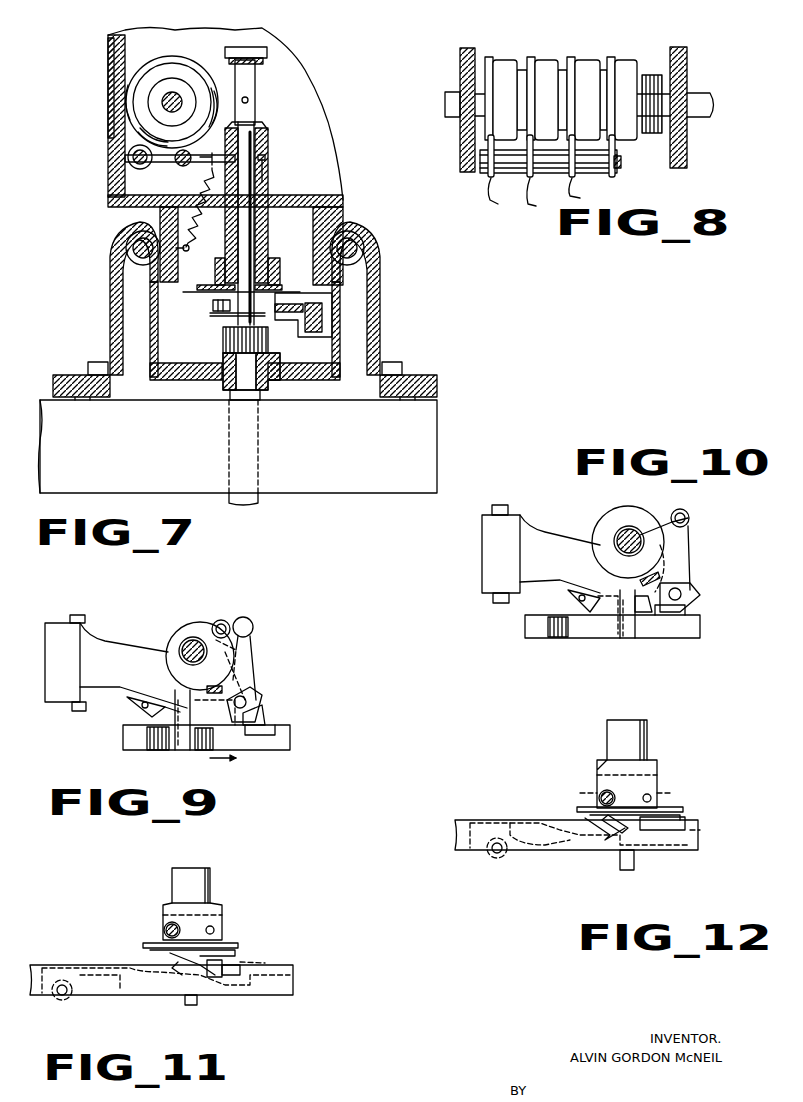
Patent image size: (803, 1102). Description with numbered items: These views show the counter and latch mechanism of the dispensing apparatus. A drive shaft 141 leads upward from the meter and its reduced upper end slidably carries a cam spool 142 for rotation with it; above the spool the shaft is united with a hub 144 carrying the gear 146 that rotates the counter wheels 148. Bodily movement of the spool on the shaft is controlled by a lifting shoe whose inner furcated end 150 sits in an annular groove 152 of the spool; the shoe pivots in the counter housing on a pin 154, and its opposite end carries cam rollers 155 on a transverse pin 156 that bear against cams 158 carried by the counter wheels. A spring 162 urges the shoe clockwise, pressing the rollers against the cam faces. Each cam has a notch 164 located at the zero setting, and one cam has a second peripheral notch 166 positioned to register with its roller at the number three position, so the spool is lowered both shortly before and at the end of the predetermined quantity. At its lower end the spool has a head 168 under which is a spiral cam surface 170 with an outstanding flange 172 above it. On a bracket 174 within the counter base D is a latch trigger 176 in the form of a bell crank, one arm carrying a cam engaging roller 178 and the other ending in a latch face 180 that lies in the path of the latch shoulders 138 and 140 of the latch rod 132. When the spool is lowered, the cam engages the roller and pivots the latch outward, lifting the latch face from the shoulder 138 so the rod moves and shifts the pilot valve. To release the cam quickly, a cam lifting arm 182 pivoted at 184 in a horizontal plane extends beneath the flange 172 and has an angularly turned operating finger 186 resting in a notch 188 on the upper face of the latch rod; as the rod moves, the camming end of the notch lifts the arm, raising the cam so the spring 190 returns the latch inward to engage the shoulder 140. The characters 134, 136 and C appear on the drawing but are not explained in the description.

In FIG. 9, the latch rod 132 is at (292, 741).
In FIG. 10, the latch rod 132 is at (700, 628).
In FIG. 11, the latch rod 132 is at (293, 978).
In FIG. 12, the latch rod 132 is at (698, 849).
In FIG. 9, the notch 134 is at (265, 727).
In FIG. 10, the notch 134 is at (666, 626).
In FIG. 9, the slot 136 is at (232, 733).
In FIG. 10, the slot 136 is at (605, 626).
In FIG. 9, the latch shoulder 138 is at (258, 710).
In FIG. 10, the latch shoulder 138 is at (645, 626).
In FIG. 9, the latch shoulder 140 is at (184, 742).
In FIG. 10, the latch shoulder 140 is at (593, 623).
In FIG. 7, the drive shaft 141 is at (258, 471).
In FIG. 9, the drive shaft 141 is at (193, 642).
In FIG. 10, the drive shaft 141 is at (636, 532).
In FIG. 11, the drive shaft 141 is at (188, 1005).
In FIG. 12, the drive shaft 141 is at (642, 867).
In FIG. 7, the cam spool 142 is at (262, 237).
In FIG. 11, the cam spool 142 is at (212, 891).
In FIG. 12, the cam spool 142 is at (647, 742).
In FIG. 7, the hub 144 is at (256, 96).
In FIG. 7, the gear 146 is at (268, 54).
In FIG. 7, the counter wheels 148 is at (180, 66).
In FIG. 8, the counter wheels 148 is at (505, 60).
In FIG. 7, the inner furcated end 150 is at (265, 158).
In FIG. 7, the annular groove 152 is at (262, 172).
In FIG. 7, the pin 154 is at (177, 169).
In FIG. 7, the cam rollers 155 is at (133, 166).
In FIG. 8, the cam rollers 155 is at (544, 194).
In FIG. 7, the transverse pin 156 is at (133, 158).
In FIG. 8, the transverse pin 156 is at (621, 163).
In FIG. 7, the cams 158 is at (135, 72).
In FIG. 8, the cams 158 is at (489, 57).
In FIG. 7, the spring 162 is at (195, 218).
In FIG. 7, the cam notch 164 is at (215, 78).
In FIG. 8, the cam notch 164 is at (485, 150).
In FIG. 7, the second peripheral notch 166 is at (135, 152).
In FIG. 8, the second peripheral notch 166 is at (564, 152).
In FIG. 7, the head 168 is at (270, 266).
In FIG. 7, the spiral cam surface 170 is at (203, 293).
In FIG. 9, the spiral cam surface 170 is at (249, 630).
In FIG. 10, the spiral cam surface 170 is at (690, 545).
In FIG. 11, the spiral cam surface 170 is at (236, 953).
In FIG. 12, the spiral cam surface 170 is at (600, 815).
In FIG. 7, the outstanding flange 172 is at (275, 287).
In FIG. 11, the outstanding flange 172 is at (238, 946).
In FIG. 12, the outstanding flange 172 is at (672, 810).
In FIG. 7, the bracket 174 is at (294, 326).
In FIG. 7, the latch trigger 176 is at (222, 334).
In FIG. 9, the latch trigger 176 is at (248, 651).
In FIG. 11, the latch trigger 176 is at (265, 963).
In FIG. 12, the latch trigger 176 is at (700, 830).
In FIG. 7, the cam engaging roller 178 is at (213, 312).
In FIG. 9, the cam engaging roller 178 is at (225, 620).
In FIG. 10, the cam engaging roller 178 is at (690, 518).
In FIG. 11, the cam engaging roller 178 is at (240, 978).
In FIG. 12, the cam engaging roller 178 is at (686, 820).
In FIG. 9, the latch face 180 is at (200, 752).
In FIG. 10, the latch face 180 is at (648, 626).
In FIG. 9, the cam lifting arm 182 is at (142, 652).
In FIG. 10, the cam lifting arm 182 is at (562, 548).
In FIG. 11, the cam lifting arm 182 is at (125, 980).
In FIG. 12, the cam lifting arm 182 is at (540, 845).
In FIG. 9, the pivotal mounting 184 is at (76, 620).
In FIG. 10, the pivotal mounting 184 is at (510, 518).
In FIG. 11, the pivotal mounting 184 is at (62, 1000).
In FIG. 12, the pivotal mounting 184 is at (497, 860).
In FIG. 9, the operating finger 186 is at (163, 748).
In FIG. 11, the operating finger 186 is at (178, 975).
In FIG. 12, the operating finger 186 is at (600, 838).
In FIG. 11, the notch 188 is at (213, 980).
In FIG. 12, the notch 188 is at (618, 836).
In FIG. 9, the spring 190 is at (237, 685).
In FIG. 10, the spring 190 is at (672, 583).
In FIG. 7, the housing C is at (322, 125).
In FIG. 7, the counter base D is at (383, 306).